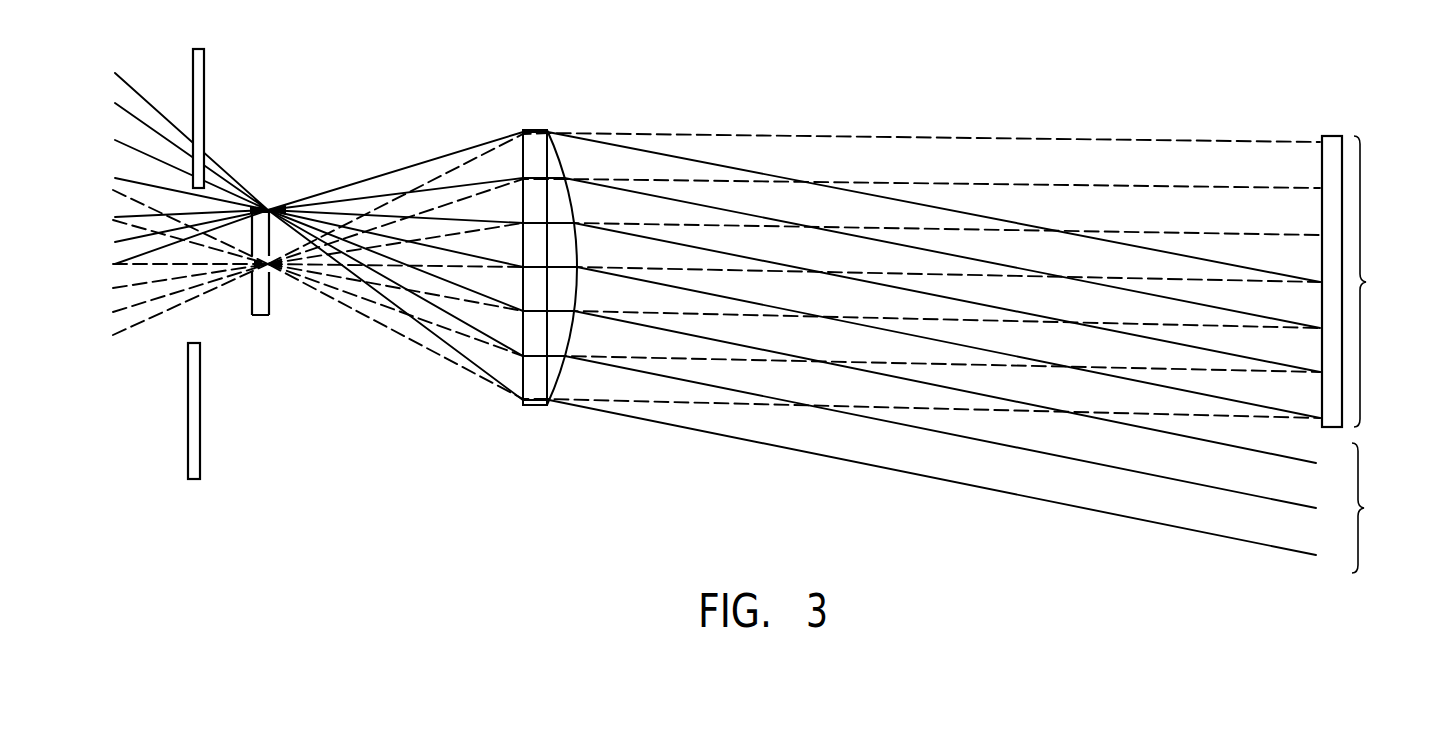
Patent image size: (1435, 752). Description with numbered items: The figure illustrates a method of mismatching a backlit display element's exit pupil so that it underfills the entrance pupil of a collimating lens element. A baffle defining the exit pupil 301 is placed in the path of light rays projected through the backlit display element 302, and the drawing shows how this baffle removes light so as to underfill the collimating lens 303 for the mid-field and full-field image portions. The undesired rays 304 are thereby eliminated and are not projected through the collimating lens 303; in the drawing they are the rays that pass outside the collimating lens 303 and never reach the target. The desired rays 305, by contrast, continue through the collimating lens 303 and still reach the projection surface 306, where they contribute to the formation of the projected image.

The baffle defining the exit pupil 301 is at (207, 73).
The backlit display element 302 is at (260, 318).
The collimating lens 303 is at (541, 128).
The undesired rays 304 is at (1365, 508).
The desired rays 305 is at (1367, 282).
The projection surface 306 is at (1332, 135).